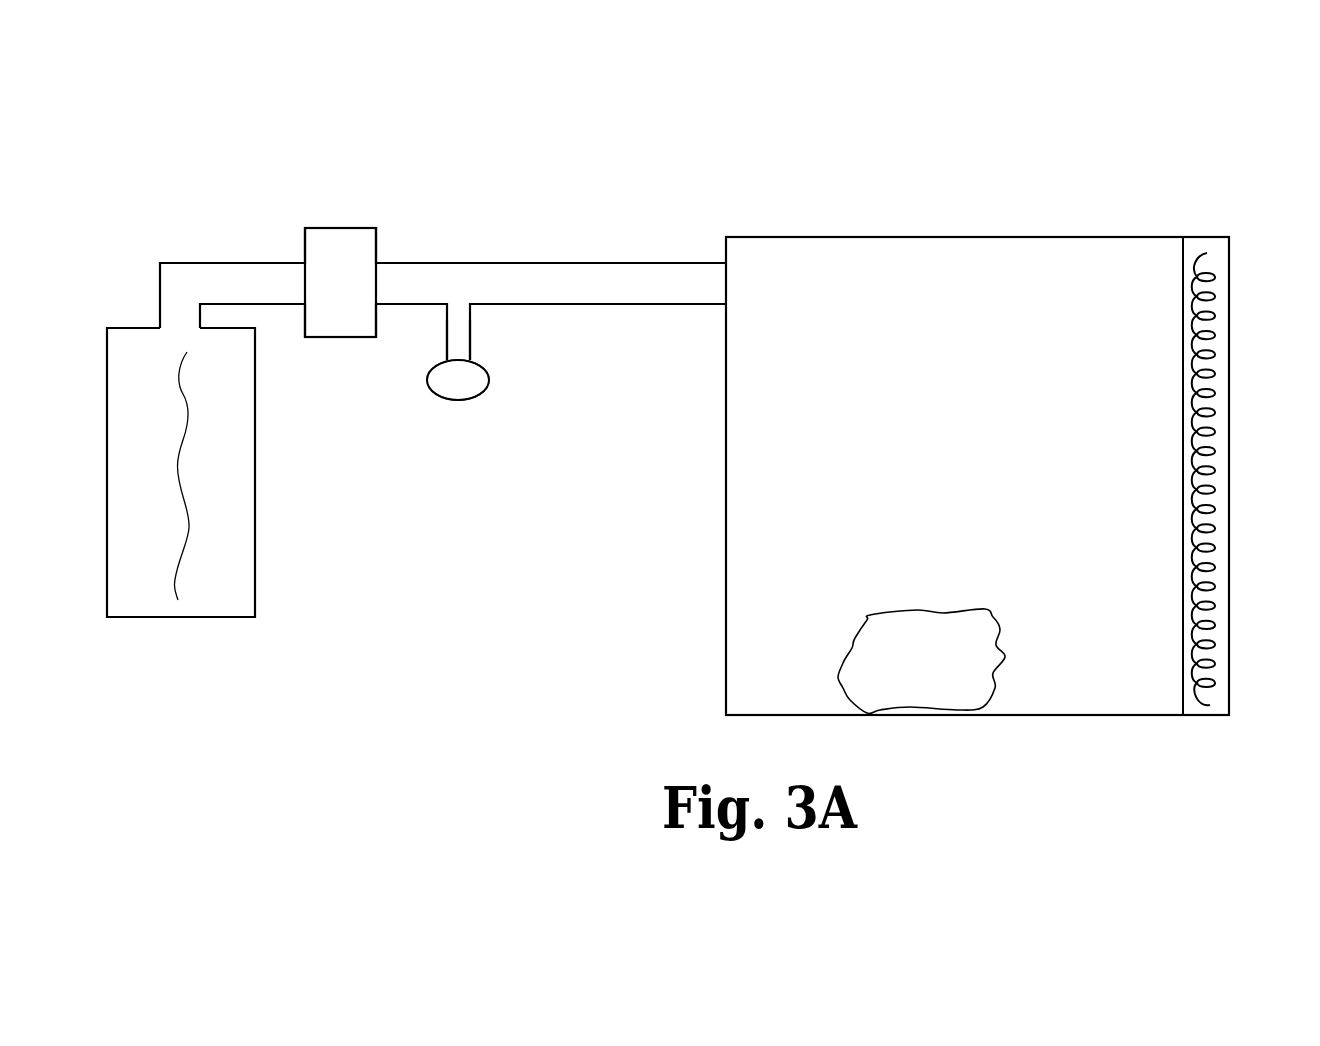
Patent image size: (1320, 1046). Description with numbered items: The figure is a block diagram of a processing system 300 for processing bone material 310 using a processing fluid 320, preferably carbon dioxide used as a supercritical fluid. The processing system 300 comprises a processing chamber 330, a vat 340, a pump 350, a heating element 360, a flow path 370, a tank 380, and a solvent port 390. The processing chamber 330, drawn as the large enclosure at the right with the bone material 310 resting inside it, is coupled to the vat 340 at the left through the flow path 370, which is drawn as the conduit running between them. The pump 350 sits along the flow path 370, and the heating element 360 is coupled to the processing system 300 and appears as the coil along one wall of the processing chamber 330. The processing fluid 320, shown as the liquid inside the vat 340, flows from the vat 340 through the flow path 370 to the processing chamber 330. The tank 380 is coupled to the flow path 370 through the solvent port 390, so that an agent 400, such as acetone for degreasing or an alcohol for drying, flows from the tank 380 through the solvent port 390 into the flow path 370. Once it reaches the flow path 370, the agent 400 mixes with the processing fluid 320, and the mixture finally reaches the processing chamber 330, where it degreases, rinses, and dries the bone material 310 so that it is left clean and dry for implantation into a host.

The processing system 300 is at (614, 178).
The bone material 310 is at (865, 668).
The processing fluid 320 is at (186, 507).
The processing chamber 330 is at (726, 592).
The vat 340 is at (175, 620).
The pump 350 is at (337, 240).
The heating element 360 is at (1213, 468).
The flow path 370 is at (208, 262).
The tank 380 is at (488, 382).
The solvent port 390 is at (470, 353).
The agent 400 is at (462, 380).